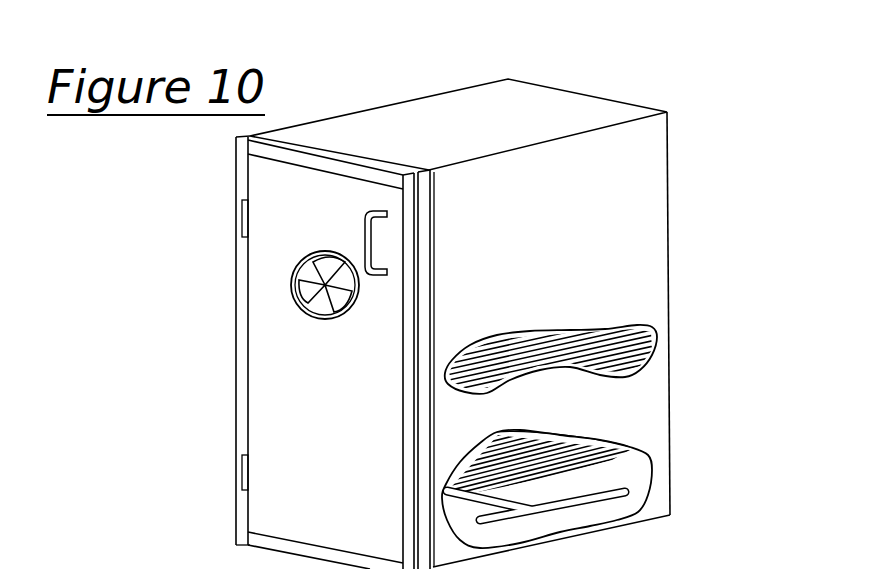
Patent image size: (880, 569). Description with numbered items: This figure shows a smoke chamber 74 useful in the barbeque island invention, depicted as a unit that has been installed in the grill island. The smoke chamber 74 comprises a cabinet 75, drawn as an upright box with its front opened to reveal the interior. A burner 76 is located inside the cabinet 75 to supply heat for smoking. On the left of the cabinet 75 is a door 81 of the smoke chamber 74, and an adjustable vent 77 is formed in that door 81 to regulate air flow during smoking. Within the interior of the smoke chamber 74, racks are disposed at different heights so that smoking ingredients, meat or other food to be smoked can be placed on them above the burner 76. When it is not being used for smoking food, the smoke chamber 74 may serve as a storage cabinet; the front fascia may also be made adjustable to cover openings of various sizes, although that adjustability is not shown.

The smoke chamber 74 is at (200, 256).
The cabinet 75 is at (574, 248).
The burner 76 is at (640, 452).
The adjustable vent 77 is at (322, 311).
The door 81 is at (327, 483).